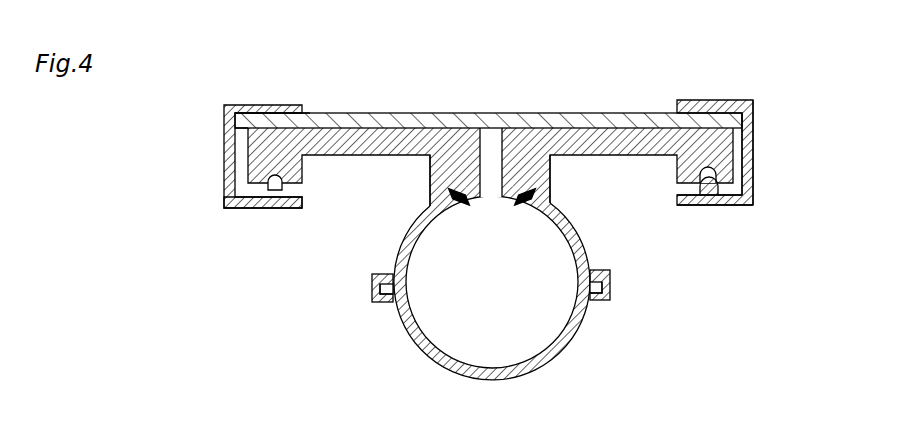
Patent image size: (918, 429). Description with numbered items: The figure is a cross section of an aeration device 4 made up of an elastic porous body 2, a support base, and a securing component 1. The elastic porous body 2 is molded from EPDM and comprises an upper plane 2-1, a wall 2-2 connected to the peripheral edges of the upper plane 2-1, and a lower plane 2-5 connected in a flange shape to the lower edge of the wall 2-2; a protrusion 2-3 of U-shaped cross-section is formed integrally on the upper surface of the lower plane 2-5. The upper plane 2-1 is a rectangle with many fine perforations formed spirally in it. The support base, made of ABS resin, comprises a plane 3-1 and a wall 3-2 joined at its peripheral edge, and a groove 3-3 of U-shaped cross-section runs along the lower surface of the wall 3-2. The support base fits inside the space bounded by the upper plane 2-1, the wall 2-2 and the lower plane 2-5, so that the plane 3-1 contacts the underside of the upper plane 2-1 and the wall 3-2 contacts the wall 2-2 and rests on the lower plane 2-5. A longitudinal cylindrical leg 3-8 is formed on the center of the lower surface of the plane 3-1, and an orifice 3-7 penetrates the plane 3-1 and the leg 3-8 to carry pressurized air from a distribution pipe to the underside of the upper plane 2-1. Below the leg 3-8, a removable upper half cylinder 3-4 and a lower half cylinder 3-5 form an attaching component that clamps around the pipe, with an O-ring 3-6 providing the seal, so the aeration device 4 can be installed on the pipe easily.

The securing component 1 is at (712, 103).
The elastic porous body 2 is at (597, 117).
The upper plane 2-1 is at (312, 124).
The wall 2-2 is at (737, 146).
The protrusion 2-3 is at (733, 165).
The lower plane 2-5 is at (677, 183).
The plane 3-1 is at (372, 131).
The wall 3-2 is at (262, 154).
The groove 3-3 is at (234, 209).
The upper half cylinder 3-4 is at (397, 258).
The lower half cylinder 3-5 is at (575, 333).
The O-ring 3-6 is at (522, 197).
The orifice 3-7 is at (490, 140).
The leg 3-8 is at (437, 174).
The aeration device 4 is at (252, 272).